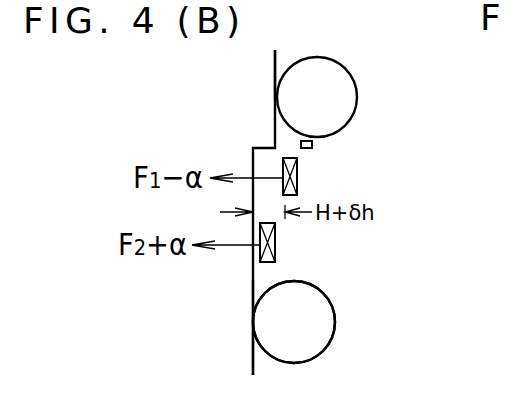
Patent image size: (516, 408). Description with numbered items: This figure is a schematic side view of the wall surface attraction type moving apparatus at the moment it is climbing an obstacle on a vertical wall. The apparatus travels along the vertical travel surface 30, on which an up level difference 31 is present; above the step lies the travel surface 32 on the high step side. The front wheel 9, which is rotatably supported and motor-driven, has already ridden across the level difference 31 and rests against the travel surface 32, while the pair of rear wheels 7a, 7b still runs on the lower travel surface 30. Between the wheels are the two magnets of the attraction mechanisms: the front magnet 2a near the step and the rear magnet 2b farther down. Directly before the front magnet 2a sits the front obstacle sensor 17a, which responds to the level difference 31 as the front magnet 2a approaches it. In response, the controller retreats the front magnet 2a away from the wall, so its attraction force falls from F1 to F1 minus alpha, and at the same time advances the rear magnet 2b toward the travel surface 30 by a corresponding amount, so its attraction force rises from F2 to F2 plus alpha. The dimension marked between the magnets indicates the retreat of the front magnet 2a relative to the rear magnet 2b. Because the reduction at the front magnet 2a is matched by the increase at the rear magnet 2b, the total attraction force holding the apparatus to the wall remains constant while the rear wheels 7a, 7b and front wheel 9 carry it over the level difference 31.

The level difference 31 is at (253, 152).
The travel surface on the high step side 32 is at (275, 60).
The front wheel 9 is at (348, 82).
The front obstacle sensor 17a is at (312, 145).
The front magnet 2a is at (297, 180).
The rear magnet 2b is at (275, 255).
The rear wheel 7a is at (327, 332).
The rear wheel 7b is at (294, 322).
The travel surface 30 is at (253, 357).